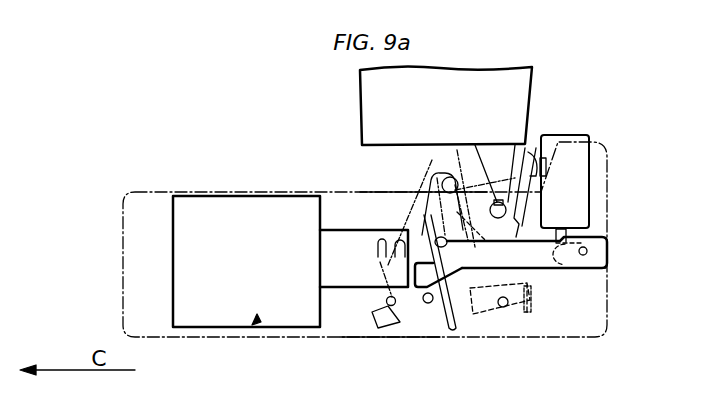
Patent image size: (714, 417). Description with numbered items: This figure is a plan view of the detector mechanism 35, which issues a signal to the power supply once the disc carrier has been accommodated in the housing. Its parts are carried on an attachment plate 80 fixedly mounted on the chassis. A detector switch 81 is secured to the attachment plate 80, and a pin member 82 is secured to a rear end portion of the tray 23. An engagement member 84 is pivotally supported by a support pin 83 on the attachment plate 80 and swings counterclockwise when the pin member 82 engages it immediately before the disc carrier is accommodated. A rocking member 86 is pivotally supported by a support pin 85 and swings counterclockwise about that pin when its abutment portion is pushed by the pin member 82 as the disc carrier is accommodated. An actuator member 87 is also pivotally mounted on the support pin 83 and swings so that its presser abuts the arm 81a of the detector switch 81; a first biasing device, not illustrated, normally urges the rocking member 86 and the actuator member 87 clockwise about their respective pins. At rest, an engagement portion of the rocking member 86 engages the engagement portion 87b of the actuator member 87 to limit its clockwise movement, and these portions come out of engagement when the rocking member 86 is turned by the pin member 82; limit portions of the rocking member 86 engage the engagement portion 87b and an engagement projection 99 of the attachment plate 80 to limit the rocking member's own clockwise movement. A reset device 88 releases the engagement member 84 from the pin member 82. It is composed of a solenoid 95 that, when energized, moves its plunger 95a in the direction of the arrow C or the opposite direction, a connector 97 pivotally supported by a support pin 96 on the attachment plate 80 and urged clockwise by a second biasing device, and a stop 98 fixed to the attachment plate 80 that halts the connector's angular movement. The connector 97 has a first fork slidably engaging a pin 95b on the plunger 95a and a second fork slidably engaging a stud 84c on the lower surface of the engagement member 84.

The tray 23 is at (527, 80).
The detector mechanism 35 is at (306, 137).
The attachment plate 80 is at (140, 265).
The detector switch 81 is at (575, 182).
The arm 81a is at (523, 185).
The pin member 82 is at (512, 207).
The support pin 83 is at (505, 308).
The engagement member 84 is at (458, 172).
The stud 84c is at (450, 180).
The support pin 85 is at (588, 251).
The rocking member 86 is at (592, 262).
The actuator member 87 is at (472, 250).
The engagement portion 87b is at (412, 186).
The reset device 88 is at (340, 298).
The solenoid 95 is at (190, 205).
The plunger 95a is at (330, 257).
The pin 95b is at (393, 263).
The support pin 96 is at (377, 305).
The connector 97 is at (398, 308).
The stop 98 is at (430, 305).
The engagement projection 99 is at (575, 230).